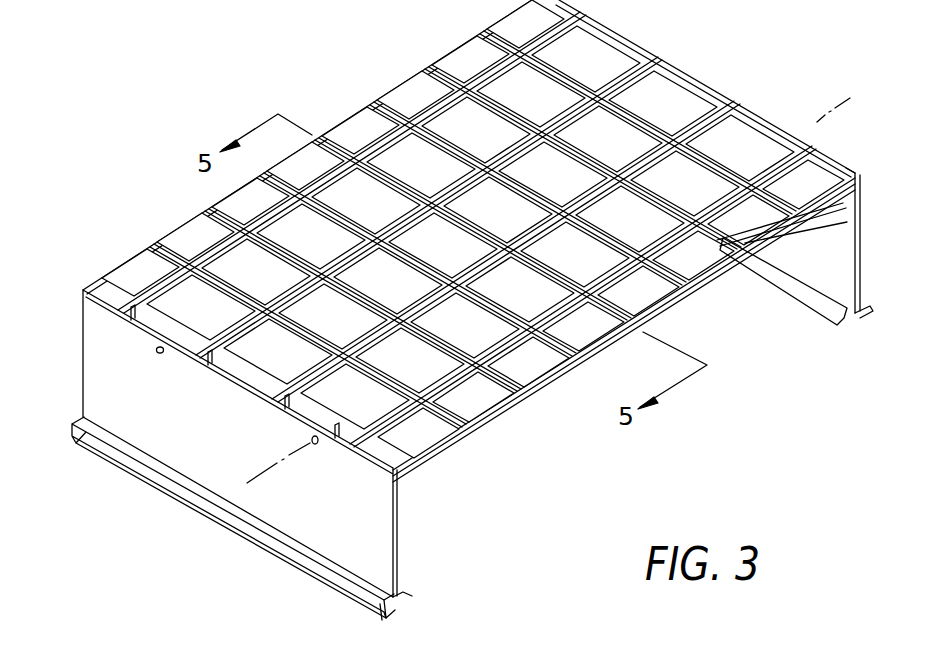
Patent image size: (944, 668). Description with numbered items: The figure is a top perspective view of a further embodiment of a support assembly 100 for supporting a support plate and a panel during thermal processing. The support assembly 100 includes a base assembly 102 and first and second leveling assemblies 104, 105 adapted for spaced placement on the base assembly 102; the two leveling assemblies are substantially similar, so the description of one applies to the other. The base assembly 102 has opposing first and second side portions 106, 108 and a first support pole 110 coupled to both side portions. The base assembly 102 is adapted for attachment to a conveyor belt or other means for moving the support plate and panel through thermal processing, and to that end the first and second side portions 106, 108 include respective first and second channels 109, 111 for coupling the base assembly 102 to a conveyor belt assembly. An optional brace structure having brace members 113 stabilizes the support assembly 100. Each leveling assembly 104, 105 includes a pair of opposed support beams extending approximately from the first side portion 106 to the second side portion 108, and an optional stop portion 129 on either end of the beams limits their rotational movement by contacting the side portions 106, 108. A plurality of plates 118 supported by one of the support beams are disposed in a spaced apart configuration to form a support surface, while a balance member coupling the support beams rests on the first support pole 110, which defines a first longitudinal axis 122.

The support assembly 100 is at (404, 62).
The base assembly 102 is at (334, 592).
The first leveling assembly 104 is at (850, 164).
The second leveling assembly 105 is at (693, 70).
The first side portion 106 is at (120, 418).
The second side portion 108 is at (812, 270).
The first channel 109 is at (383, 602).
The first support pole 110 is at (337, 426).
The second channel 111 is at (834, 327).
The brace members 113 is at (424, 465).
The plates 118 is at (473, 392).
The first longitudinal axis 122 is at (297, 452).
The stop portion 129 is at (360, 441).